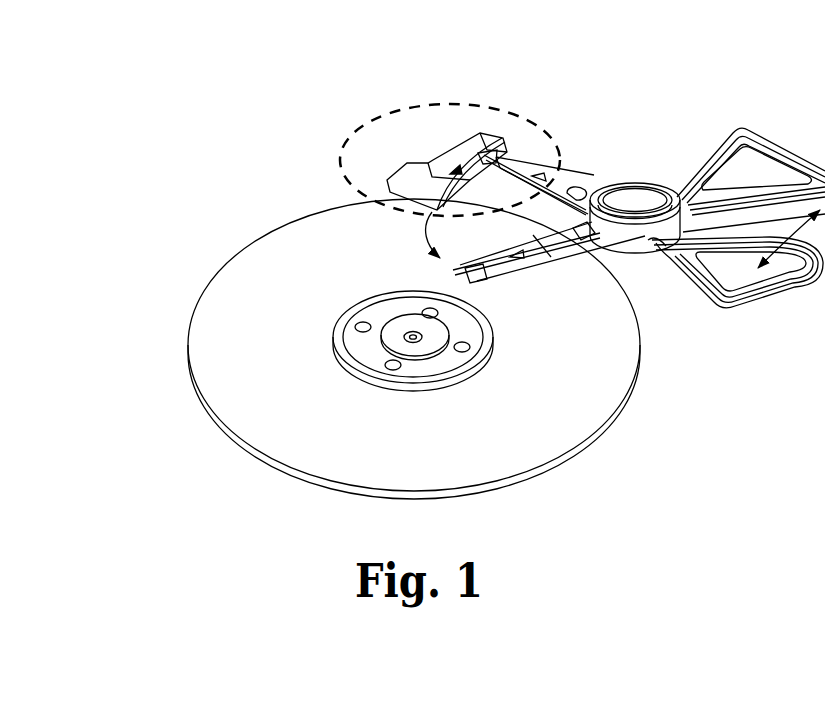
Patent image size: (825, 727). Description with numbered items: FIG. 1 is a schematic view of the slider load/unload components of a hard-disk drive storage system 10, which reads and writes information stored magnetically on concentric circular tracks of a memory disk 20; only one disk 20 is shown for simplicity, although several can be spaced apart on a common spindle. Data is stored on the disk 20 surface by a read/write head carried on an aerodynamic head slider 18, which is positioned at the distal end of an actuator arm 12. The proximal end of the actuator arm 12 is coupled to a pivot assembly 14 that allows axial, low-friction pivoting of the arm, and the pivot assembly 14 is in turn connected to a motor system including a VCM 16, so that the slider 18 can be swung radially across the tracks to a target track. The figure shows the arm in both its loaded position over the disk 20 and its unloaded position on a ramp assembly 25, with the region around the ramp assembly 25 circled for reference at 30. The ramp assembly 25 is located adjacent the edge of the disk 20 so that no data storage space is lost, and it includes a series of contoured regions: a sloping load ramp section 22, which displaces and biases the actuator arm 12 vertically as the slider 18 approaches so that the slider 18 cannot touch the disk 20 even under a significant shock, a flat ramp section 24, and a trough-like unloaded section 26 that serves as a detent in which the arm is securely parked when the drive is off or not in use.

The hard-disk drive storage system 10 is at (186, 156).
The actuator arm 12 is at (520, 158).
The pivot assembly 14 is at (641, 196).
The VCM 16 is at (770, 150).
The head slider 18 is at (478, 284).
The memory disk 20 is at (562, 420).
The sloping load ramp section 22 is at (420, 185).
The flat ramp section 24 is at (412, 146).
The ramp assembly 25 is at (406, 138).
The unloaded section 26 is at (457, 136).
The detail region 30 is at (493, 107).